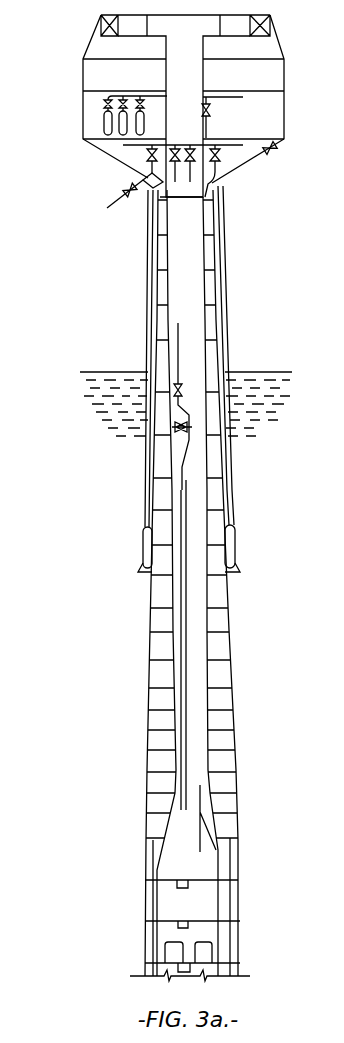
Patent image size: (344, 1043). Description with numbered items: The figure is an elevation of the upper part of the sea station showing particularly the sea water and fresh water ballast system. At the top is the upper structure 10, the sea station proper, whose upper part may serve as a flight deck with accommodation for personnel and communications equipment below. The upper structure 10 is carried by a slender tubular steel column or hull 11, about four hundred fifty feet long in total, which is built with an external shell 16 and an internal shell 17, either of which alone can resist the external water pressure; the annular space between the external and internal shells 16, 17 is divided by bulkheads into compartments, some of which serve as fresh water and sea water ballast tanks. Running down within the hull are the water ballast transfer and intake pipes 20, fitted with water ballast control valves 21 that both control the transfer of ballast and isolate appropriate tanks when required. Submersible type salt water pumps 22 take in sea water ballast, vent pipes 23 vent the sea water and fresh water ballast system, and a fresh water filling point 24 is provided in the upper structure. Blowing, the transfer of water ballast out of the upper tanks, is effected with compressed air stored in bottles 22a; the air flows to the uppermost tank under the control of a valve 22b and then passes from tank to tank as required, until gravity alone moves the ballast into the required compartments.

The upper structure 10 is at (82, 81).
The compressed air bottles 22a is at (103, 118).
The air control valve 22b is at (210, 108).
The water ballast control valves 21 is at (147, 155).
The fresh water filling point 24 is at (132, 200).
The submersible type salt water pumps 22 is at (145, 540).
The tubular steel column 11 is at (232, 673).
The external shell 16 is at (229, 626).
The internal shell 17 is at (217, 594).
The water ballast transfer and intake pipes 20 is at (183, 638).
The vent pipes 23 is at (180, 345).